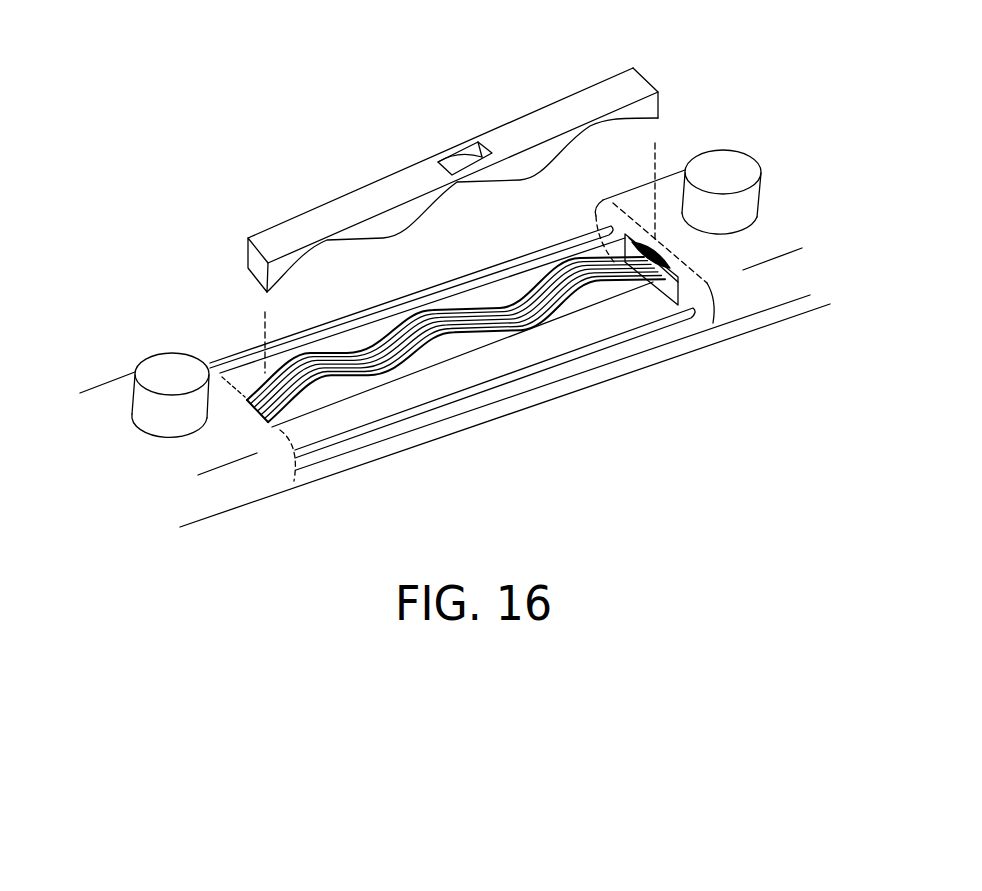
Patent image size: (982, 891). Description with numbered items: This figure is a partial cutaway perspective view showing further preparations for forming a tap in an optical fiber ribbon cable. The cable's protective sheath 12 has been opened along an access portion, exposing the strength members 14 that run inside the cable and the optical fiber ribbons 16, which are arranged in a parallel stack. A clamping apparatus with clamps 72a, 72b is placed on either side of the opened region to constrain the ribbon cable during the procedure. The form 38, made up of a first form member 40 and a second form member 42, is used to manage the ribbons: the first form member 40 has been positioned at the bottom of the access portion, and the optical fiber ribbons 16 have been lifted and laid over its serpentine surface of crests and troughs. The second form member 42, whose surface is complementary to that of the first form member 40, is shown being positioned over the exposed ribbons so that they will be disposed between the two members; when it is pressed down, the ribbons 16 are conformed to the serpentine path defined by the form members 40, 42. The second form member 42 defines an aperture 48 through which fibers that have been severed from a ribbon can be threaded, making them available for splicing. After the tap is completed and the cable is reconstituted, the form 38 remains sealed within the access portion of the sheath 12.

The sheath 12 is at (317, 467).
The strength member 14 is at (563, 362).
The optical fiber ribbon 16 is at (457, 312).
The form 38 is at (597, 309).
The first form member 40 is at (465, 343).
The second form member 42 is at (592, 93).
The aperture 48 is at (487, 147).
The clamp 72a is at (190, 277).
The clamp 72b is at (740, 75).